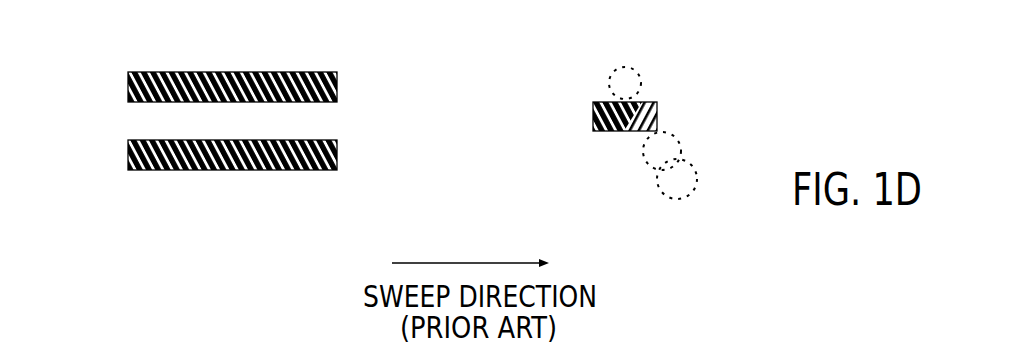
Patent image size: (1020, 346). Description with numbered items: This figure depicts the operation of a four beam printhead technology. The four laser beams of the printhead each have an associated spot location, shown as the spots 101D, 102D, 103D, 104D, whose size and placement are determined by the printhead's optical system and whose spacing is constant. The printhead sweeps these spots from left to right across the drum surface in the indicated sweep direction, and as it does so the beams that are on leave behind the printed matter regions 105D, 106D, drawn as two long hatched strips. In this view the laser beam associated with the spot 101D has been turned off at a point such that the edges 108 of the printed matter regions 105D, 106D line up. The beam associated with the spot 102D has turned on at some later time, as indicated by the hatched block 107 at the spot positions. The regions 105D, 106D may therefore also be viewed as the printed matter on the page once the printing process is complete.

The spot 101D is at (630, 66).
The spot 102D is at (657, 106).
The spot 103D is at (673, 137).
The spot 104D is at (690, 173).
The printed matter region 105D is at (215, 62).
The printed matter region 106D is at (127, 152).
The hatched block 107 is at (614, 94).
The edges 108 is at (338, 66).